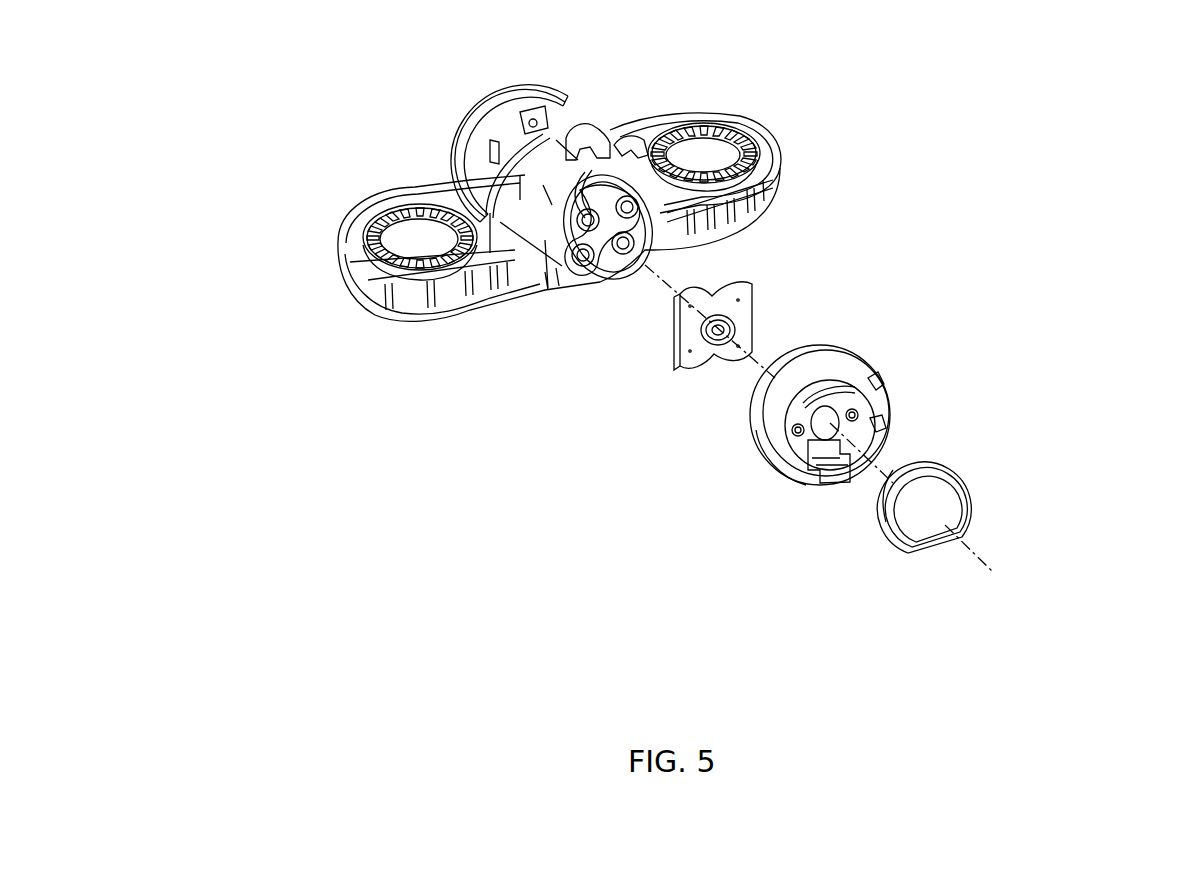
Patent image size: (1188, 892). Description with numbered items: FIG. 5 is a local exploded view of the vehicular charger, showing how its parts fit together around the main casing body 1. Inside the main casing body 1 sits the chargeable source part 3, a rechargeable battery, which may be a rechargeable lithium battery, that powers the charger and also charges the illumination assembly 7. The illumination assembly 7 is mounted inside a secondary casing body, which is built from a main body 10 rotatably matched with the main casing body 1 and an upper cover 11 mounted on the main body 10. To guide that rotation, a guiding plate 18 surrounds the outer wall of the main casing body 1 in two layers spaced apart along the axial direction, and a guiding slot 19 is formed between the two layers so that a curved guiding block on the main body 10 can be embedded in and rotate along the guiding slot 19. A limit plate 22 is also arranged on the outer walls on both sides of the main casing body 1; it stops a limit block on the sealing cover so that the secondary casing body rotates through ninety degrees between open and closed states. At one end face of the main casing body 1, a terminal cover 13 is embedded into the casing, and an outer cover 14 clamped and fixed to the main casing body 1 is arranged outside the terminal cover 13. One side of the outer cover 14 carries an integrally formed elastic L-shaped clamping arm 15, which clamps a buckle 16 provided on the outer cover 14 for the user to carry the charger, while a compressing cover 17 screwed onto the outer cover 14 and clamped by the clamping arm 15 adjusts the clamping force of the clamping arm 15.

The main casing body 1 is at (553, 172).
The chargeable source part 3 is at (614, 234).
The illumination assembly 7 is at (420, 237).
The main body 10 is at (527, 278).
The upper cover 11 is at (735, 198).
The terminal cover 13 is at (743, 313).
The outer cover 14 is at (833, 352).
The clamping arm 15 is at (835, 477).
The buckle 16 is at (882, 402).
The compressing cover 17 is at (953, 502).
The guiding plate 18 is at (588, 137).
The guiding slot 19 is at (503, 175).
The limit plate 22 is at (493, 142).